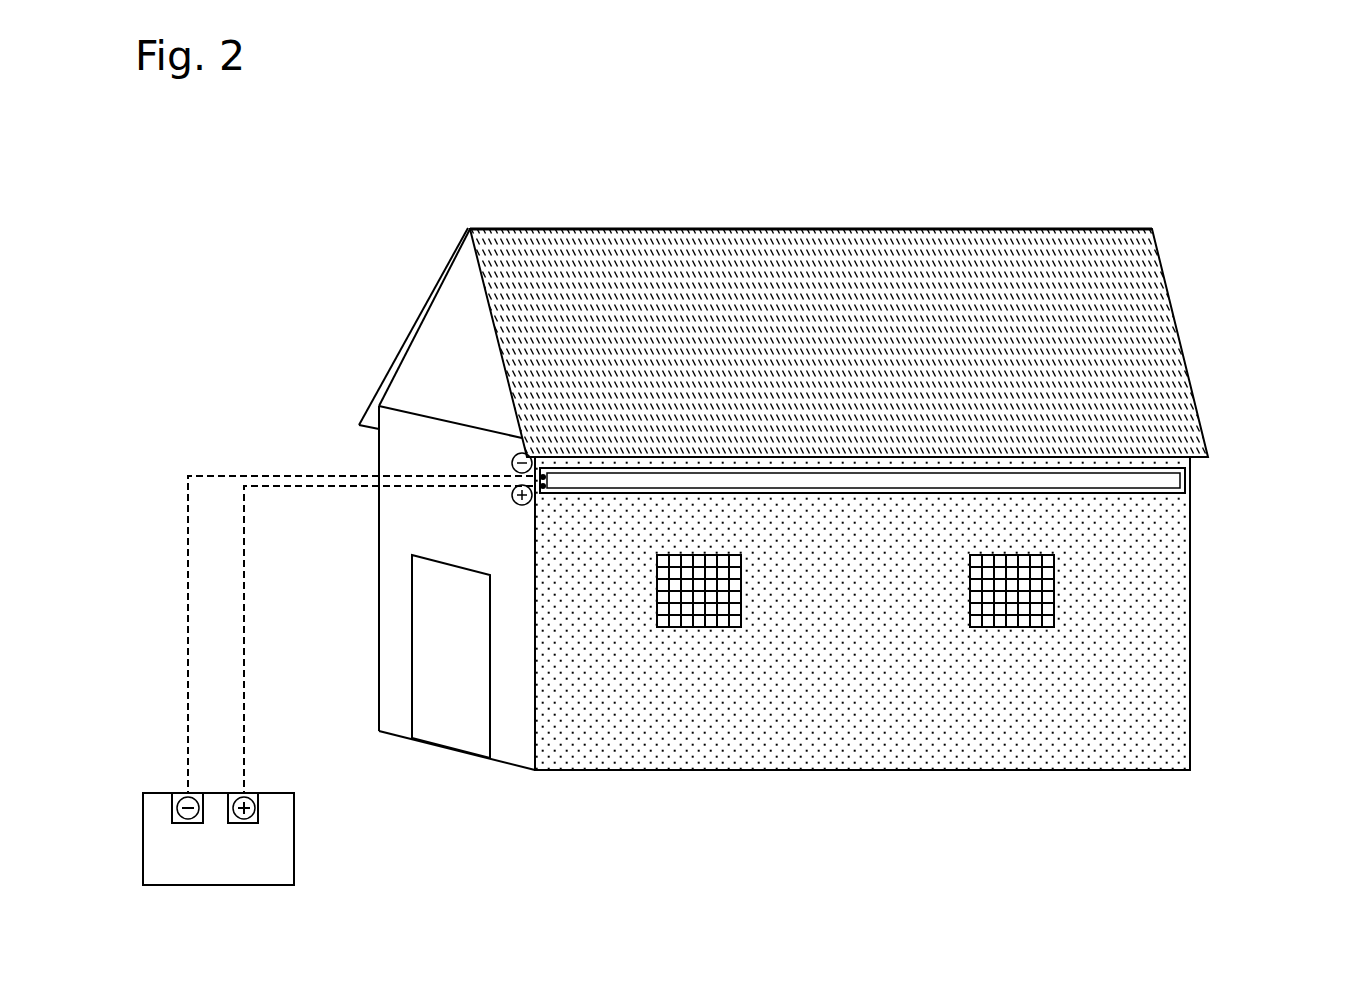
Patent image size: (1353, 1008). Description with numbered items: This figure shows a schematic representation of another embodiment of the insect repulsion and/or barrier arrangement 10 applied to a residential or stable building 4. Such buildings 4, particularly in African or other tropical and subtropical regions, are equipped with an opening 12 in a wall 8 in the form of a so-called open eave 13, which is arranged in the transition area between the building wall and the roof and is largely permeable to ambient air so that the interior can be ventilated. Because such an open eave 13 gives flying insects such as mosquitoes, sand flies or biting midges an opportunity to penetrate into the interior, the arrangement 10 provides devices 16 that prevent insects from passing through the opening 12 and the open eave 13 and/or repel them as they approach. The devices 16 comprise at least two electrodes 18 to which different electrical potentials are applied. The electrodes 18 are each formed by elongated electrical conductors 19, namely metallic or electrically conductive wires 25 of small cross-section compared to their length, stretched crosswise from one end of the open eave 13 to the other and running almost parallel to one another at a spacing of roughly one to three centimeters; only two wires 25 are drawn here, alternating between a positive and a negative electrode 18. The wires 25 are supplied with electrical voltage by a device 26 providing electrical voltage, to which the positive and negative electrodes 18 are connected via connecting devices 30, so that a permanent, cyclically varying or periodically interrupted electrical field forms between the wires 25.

The building 4 is at (737, 545).
The wall 8 is at (1168, 688).
The insect repulsion and/or barrier arrangement 10 is at (362, 440).
The opening 12 is at (863, 343).
The open eave 13 is at (1138, 457).
The devices 16 is at (1169, 503).
The electrodes 18 is at (902, 481).
The elongated electrical conductors 19 is at (937, 478).
The wires 25 is at (1185, 485).
The device providing electrical voltage 26 is at (294, 805).
The connecting devices 30 is at (212, 475).